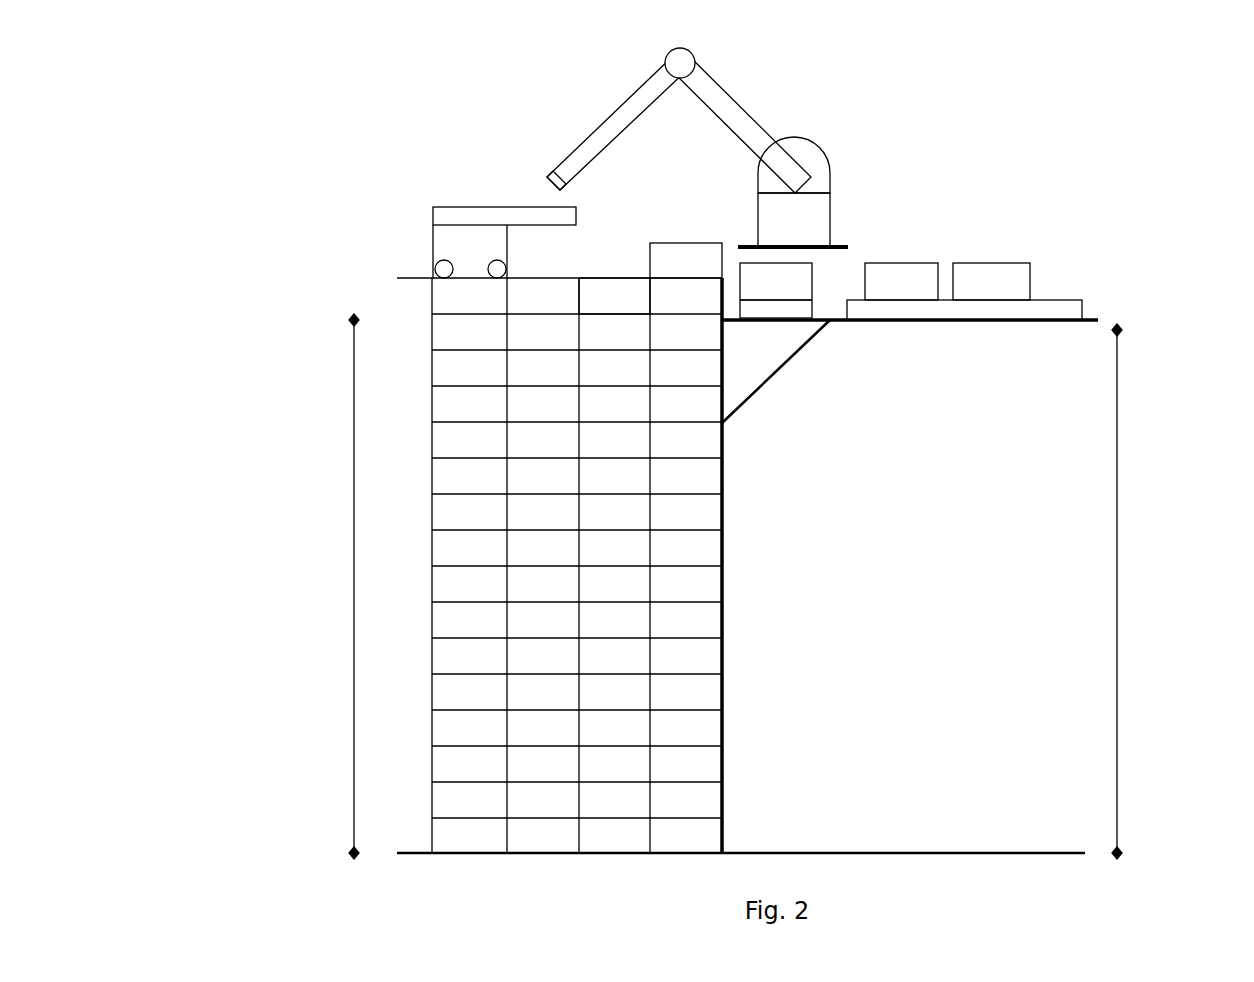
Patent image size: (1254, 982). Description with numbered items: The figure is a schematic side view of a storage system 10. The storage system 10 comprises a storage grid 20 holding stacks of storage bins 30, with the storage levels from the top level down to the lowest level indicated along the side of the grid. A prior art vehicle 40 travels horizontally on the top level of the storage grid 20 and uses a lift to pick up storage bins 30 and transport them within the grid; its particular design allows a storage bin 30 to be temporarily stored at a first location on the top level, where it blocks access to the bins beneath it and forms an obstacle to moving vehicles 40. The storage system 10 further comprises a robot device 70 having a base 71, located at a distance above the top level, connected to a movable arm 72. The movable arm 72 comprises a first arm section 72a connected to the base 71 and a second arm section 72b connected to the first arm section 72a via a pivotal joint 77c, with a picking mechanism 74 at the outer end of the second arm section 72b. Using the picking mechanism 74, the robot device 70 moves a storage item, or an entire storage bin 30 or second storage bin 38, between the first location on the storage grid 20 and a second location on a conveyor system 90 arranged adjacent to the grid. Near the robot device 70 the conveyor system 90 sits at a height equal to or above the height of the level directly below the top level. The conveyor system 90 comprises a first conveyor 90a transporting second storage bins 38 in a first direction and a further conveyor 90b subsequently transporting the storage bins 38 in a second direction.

The storage system 10 is at (312, 142).
The storage grid 20 is at (300, 465).
The storage bin 30 is at (710, 258).
The second storage bin 38 is at (898, 272).
The vehicle 40 is at (463, 258).
The robot device 70 is at (836, 127).
The base 71 is at (817, 222).
The movable arm 72 is at (562, 100).
The first arm section 72a is at (737, 107).
The second arm section 72b is at (615, 123).
The picking mechanism 74 is at (565, 167).
The arm joint 77c is at (673, 68).
The conveyor system 90 is at (1137, 313).
The first conveyor 90a is at (788, 308).
The conveyor 90b is at (922, 310).